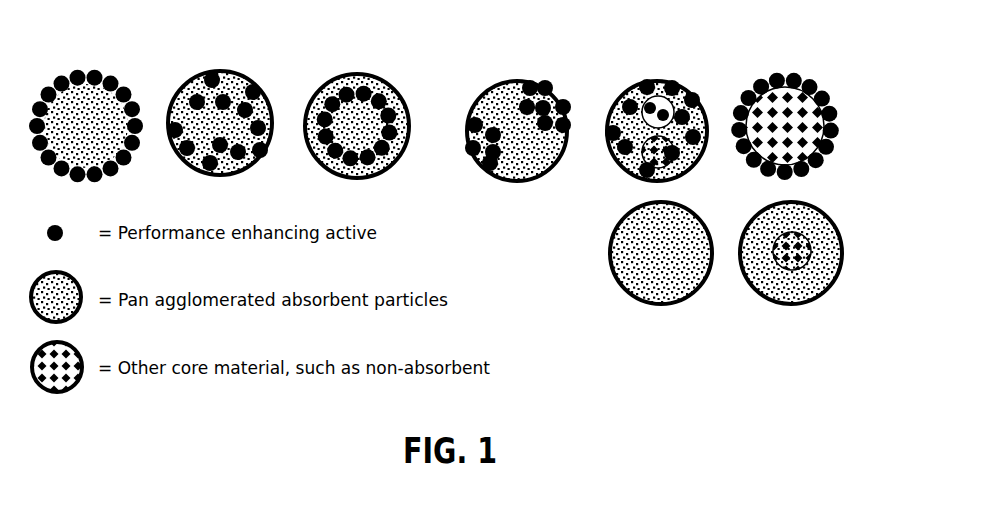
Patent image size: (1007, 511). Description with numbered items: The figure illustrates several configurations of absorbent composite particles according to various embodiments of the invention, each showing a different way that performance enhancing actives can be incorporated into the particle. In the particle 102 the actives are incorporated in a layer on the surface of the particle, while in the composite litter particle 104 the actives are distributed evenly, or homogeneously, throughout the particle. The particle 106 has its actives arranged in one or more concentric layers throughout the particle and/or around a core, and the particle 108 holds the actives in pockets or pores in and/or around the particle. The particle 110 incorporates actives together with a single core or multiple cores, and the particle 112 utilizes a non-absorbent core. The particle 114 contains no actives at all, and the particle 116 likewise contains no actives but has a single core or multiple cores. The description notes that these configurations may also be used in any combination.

The absorbent particle with surface layer of actives 102 is at (112, 82).
The composite litter particle with homogeneously distributed actives 104 is at (254, 82).
The particle with concentric layers of actives 106 is at (385, 82).
The particle with actives in pockets or pores 108 is at (515, 82).
The particle with single or multiple cores 110 is at (658, 82).
The particle with non-absorbent core 112 is at (807, 82).
The particle with no actives 114 is at (610, 260).
The particle with no actives and single or multiple cores 116 is at (838, 233).